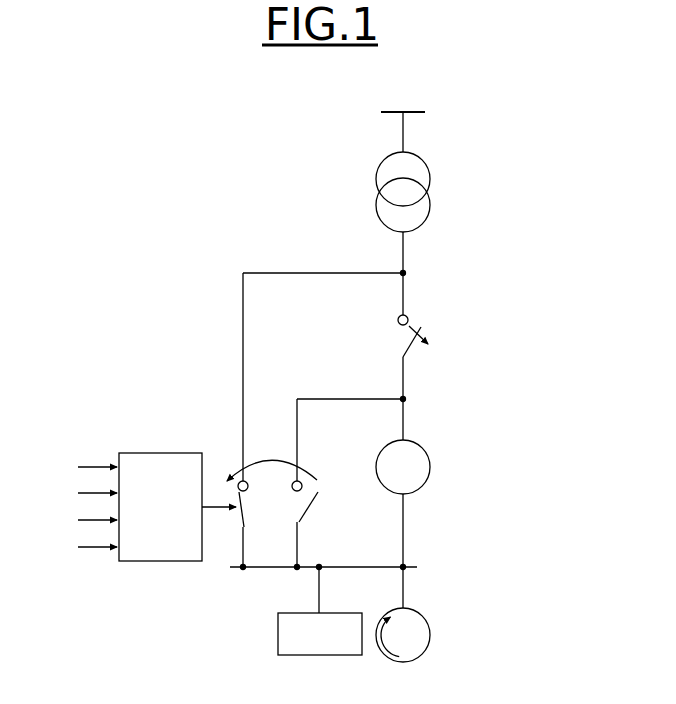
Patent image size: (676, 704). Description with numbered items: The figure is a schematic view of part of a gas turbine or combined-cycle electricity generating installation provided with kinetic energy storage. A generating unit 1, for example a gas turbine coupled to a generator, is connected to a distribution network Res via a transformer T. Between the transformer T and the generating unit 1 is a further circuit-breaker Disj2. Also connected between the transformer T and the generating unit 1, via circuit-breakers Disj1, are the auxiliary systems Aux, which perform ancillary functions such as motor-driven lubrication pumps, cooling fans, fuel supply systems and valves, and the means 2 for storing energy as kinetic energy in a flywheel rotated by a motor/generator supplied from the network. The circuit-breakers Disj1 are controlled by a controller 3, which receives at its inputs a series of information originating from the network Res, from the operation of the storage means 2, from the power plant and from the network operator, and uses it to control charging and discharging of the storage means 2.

The generating unit 1 is at (431, 466).
The means for the storage of energy 2 is at (431, 635).
The controller 3 is at (148, 507).
The transformer T is at (430, 170).
The distribution network Res is at (403, 121).
The circuit-breakers Disj1 is at (329, 527).
The further circuit-breaker Disj2 is at (423, 329).
The auxiliary systems Aux is at (320, 611).